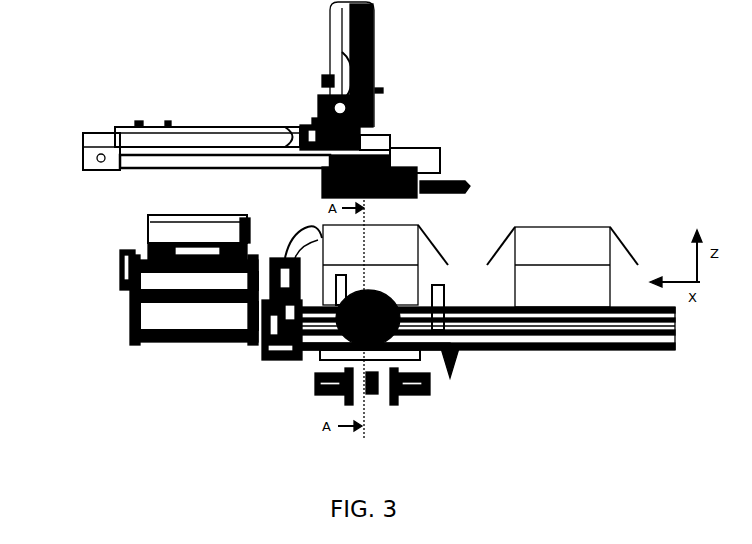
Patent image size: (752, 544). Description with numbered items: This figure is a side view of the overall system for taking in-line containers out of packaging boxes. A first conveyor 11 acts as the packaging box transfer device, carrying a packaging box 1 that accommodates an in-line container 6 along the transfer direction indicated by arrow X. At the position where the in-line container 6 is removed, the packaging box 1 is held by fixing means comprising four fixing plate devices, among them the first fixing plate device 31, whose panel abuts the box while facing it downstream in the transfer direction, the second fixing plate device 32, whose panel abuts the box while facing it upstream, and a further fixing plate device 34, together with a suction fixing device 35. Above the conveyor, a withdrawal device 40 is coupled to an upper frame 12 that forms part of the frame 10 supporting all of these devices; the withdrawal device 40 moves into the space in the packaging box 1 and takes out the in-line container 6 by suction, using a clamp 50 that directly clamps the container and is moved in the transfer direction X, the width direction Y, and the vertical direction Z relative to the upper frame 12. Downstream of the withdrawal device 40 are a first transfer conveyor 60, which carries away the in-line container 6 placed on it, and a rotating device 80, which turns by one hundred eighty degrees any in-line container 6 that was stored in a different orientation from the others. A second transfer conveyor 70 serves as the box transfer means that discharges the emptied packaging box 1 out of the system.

The packaging box 1 is at (599, 213).
The in-line container 6 is at (425, 175).
The frame 10 is at (526, 364).
The first conveyor 11 is at (556, 352).
The upper frame 12 is at (82, 189).
The first fixing plate device 31 is at (259, 352).
The second fixing plate device 32 is at (460, 374).
The fixing plate device 34 is at (325, 350).
The suction fixing device 35 is at (374, 399).
The withdrawal device 40 is at (406, 89).
The clamp 50 is at (388, 182).
The first transfer conveyor 60 is at (108, 283).
The second transfer conveyor 70 is at (424, 399).
The rotating device 80 is at (140, 243).